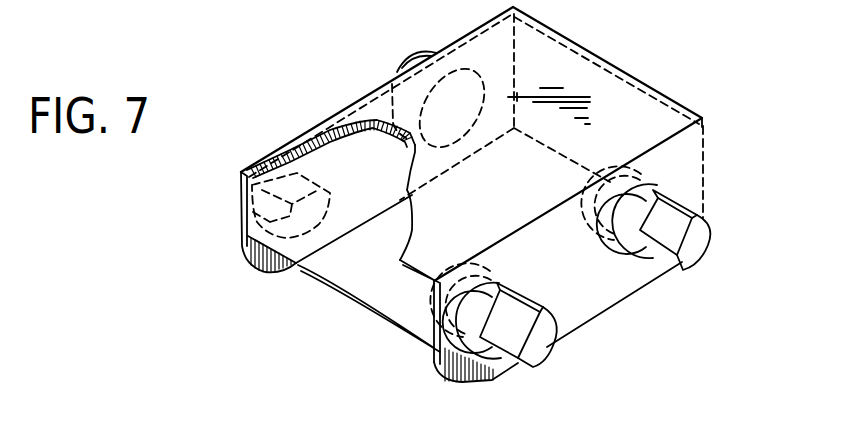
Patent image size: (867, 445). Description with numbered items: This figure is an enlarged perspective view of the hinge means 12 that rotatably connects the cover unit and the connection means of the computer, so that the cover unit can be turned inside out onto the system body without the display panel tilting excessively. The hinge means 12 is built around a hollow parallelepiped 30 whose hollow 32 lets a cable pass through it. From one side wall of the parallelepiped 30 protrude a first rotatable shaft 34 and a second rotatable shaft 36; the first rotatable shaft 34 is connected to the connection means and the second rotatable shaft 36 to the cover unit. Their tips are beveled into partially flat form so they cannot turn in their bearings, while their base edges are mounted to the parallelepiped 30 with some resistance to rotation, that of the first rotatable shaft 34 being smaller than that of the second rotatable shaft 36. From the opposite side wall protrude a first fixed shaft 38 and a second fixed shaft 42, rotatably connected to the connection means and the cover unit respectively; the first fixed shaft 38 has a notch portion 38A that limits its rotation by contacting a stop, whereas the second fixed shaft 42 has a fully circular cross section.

The hinge means 12 is at (292, 100).
The hollow parallelepiped 30 is at (583, 77).
The hollow 32 is at (384, 287).
The first rotatable shaft 34 is at (540, 333).
The second rotatable shaft 36 is at (690, 236).
The first fixed shaft 38 is at (240, 202).
The notch portion 38A is at (311, 183).
The second fixed shaft 42 is at (412, 57).